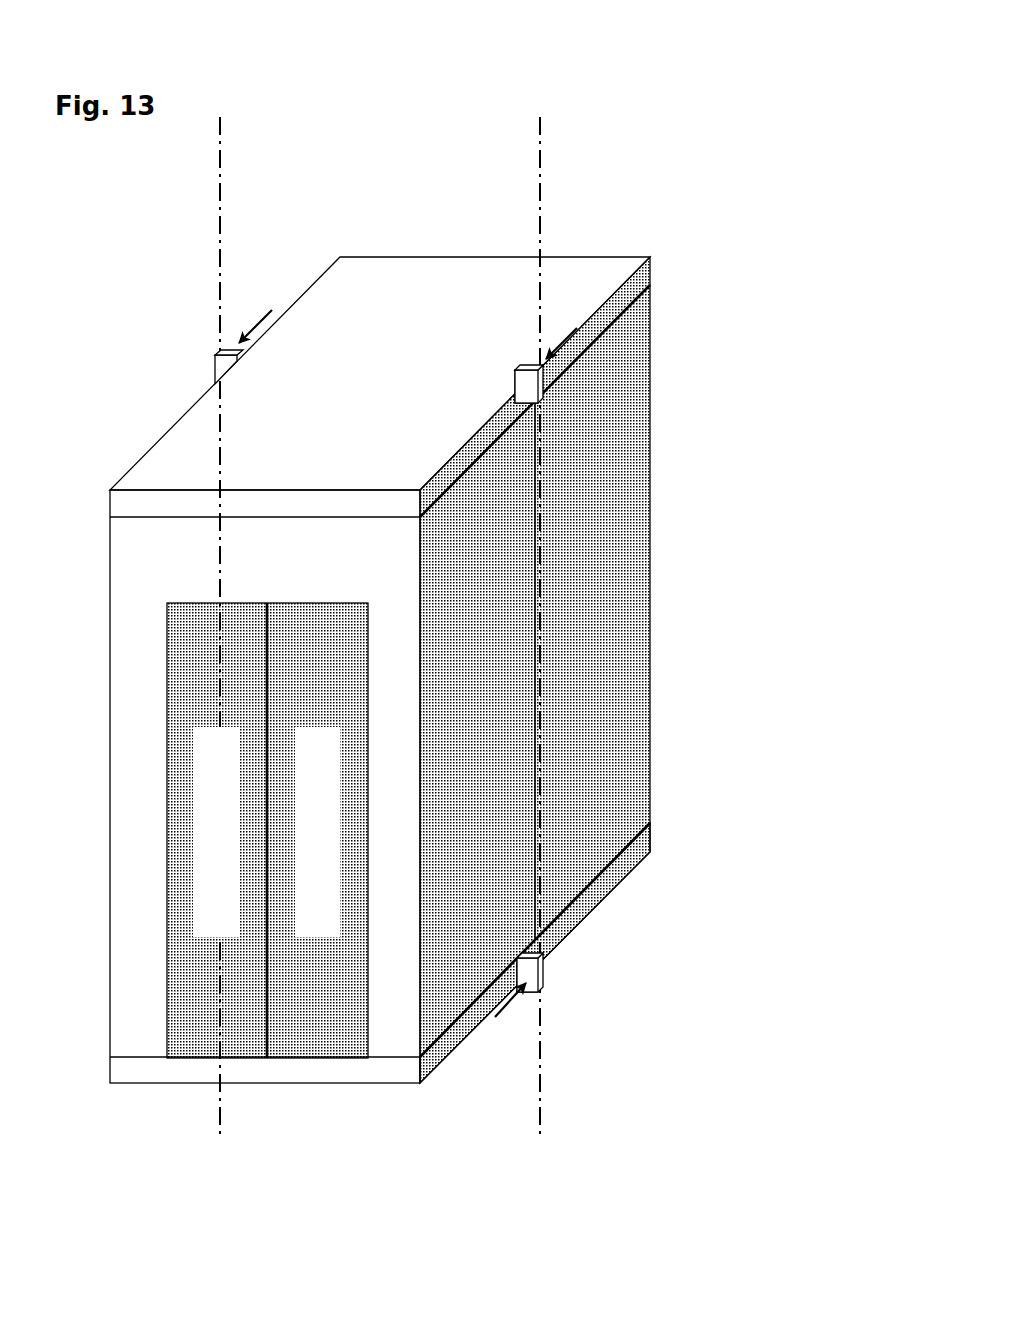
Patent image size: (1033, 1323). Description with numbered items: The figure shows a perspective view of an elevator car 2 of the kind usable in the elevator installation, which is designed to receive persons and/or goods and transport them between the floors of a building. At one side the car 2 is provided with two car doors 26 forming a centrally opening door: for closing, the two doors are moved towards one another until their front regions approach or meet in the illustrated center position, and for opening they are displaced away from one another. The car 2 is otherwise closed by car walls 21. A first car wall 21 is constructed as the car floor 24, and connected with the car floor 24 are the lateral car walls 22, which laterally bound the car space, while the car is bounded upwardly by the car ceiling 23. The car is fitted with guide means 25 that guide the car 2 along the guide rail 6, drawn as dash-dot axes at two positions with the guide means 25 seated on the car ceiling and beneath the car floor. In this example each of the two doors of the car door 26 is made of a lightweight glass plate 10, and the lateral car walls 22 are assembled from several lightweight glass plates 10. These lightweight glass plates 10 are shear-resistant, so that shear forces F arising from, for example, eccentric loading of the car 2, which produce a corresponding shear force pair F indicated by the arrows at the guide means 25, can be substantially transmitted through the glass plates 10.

The elevator car 2 is at (460, 152).
The guide rail 6 is at (542, 175).
The lightweight glass plate 10 is at (592, 486).
The car wall 21 is at (459, 629).
The lateral car wall 22 is at (608, 567).
The car ceiling 23 is at (585, 280).
The car floor 24 is at (622, 872).
The guide means 25 is at (527, 388).
The car door 26 is at (337, 878).